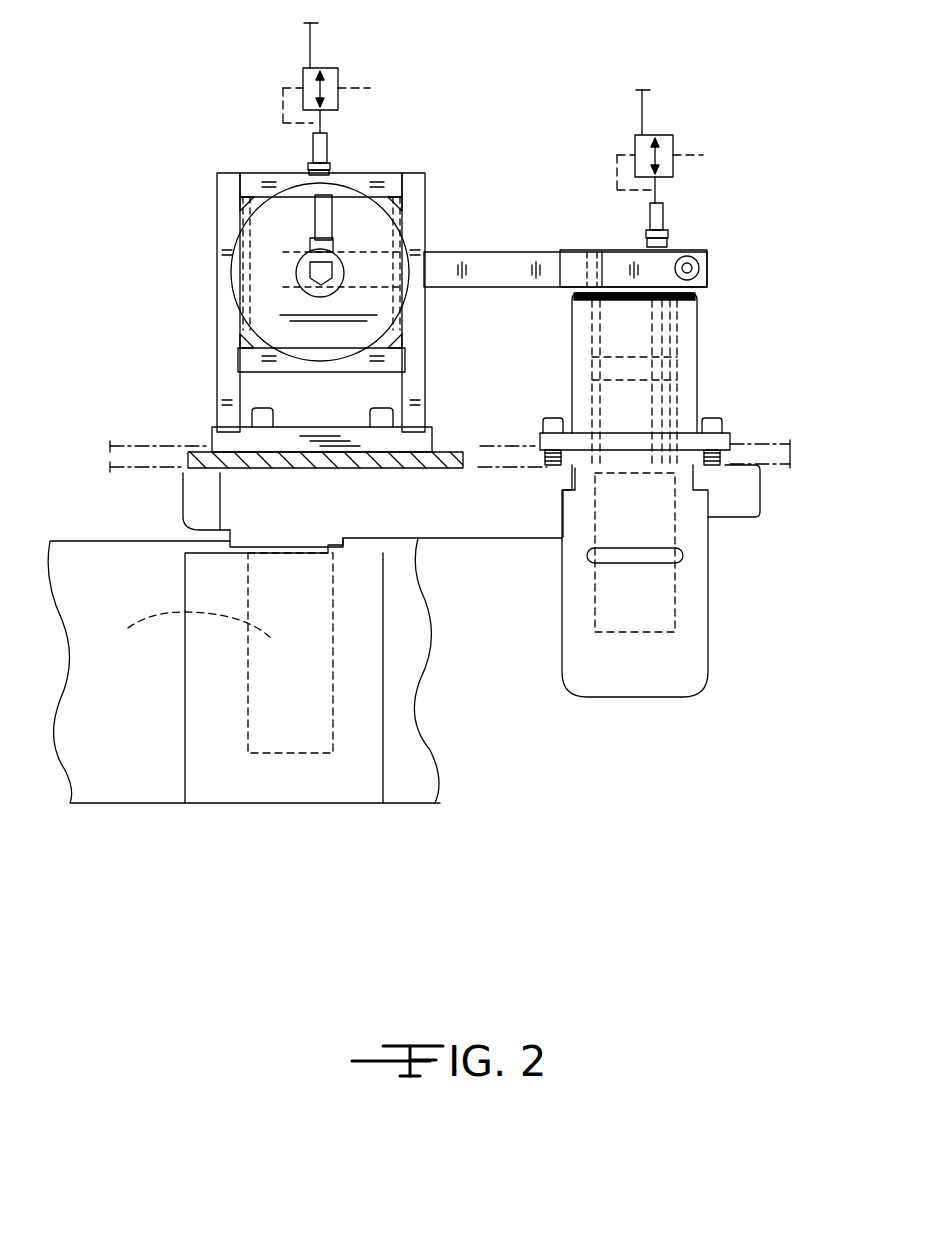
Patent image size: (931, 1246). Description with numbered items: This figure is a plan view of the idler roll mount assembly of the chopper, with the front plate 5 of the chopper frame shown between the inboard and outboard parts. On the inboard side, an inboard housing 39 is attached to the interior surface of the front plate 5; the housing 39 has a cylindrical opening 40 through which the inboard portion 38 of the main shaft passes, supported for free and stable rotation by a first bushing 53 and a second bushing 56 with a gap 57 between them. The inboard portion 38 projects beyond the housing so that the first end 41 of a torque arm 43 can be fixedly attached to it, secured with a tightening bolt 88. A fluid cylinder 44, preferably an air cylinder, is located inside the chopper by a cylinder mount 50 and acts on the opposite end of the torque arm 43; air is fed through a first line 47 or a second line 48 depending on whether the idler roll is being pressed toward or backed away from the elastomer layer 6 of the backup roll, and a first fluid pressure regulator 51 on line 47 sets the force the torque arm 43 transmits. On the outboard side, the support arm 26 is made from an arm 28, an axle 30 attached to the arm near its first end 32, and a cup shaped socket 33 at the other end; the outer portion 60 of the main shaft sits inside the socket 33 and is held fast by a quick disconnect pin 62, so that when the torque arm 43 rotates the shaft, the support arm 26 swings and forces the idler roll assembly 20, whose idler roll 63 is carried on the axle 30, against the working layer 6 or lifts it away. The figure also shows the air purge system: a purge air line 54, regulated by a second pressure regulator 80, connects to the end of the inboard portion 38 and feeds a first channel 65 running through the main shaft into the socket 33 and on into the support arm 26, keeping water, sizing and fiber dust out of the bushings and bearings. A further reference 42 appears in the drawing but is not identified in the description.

The front plate 5 is at (135, 442).
The elastomer layer 6 is at (403, 622).
The idler roll assembly 20 is at (395, 730).
The support arm 26 is at (492, 540).
The arm 28 is at (471, 517).
The axle 30 is at (218, 653).
The first end 32 is at (193, 503).
The socket 33 is at (700, 587).
The inboard portion 38 is at (640, 422).
The inboard housing 39 is at (698, 388).
The cylindrical opening 40 is at (677, 337).
The first end 41 is at (623, 263).
The gap 42 is at (507, 446).
The torque arm 43 is at (497, 265).
The fluid cylinder 44 is at (262, 276).
The first line 47 is at (316, 212).
The second line 48 is at (328, 150).
The cylinder mount 50 is at (228, 334).
The first fluid pressure regulator 51 is at (338, 72).
The first bushing 53 is at (597, 395).
The purge air line 54 is at (665, 217).
The second bushing 56 is at (597, 320).
The gap 57 is at (607, 368).
The outer portion 60 is at (656, 596).
The quick disconnect pin 62 is at (637, 548).
The idler roll 63 is at (213, 778).
The first channel 65 is at (657, 317).
The second pressure regulator 80 is at (675, 168).
The tightening bolt 88 is at (707, 264).